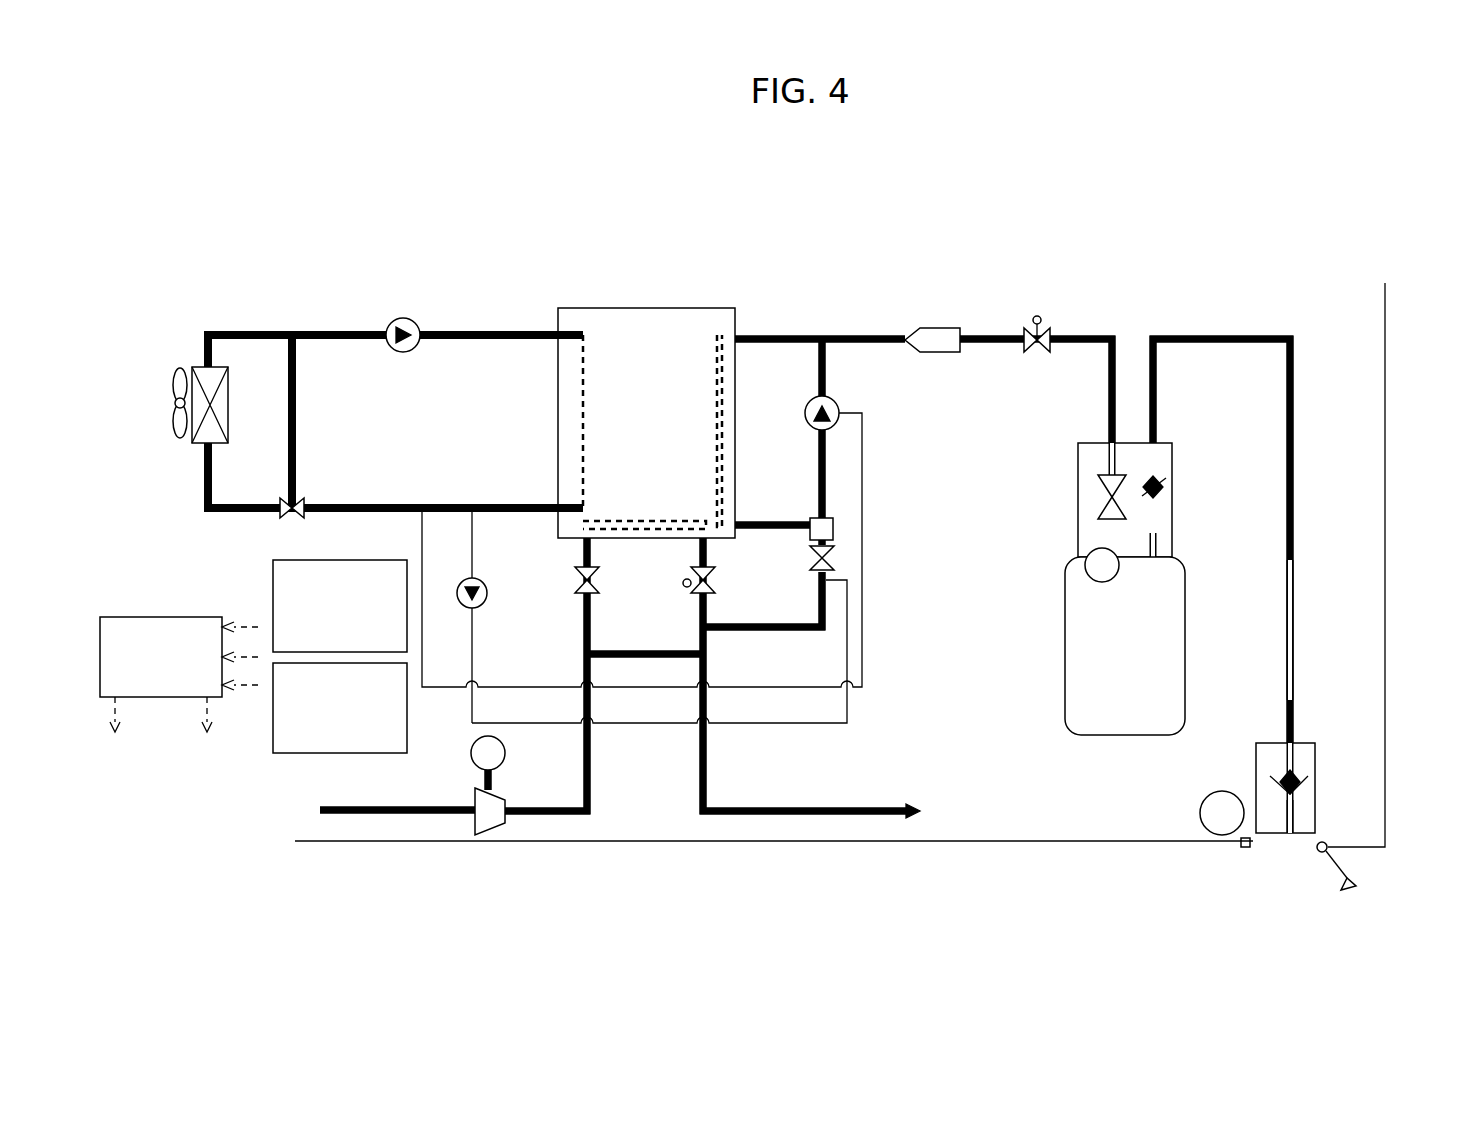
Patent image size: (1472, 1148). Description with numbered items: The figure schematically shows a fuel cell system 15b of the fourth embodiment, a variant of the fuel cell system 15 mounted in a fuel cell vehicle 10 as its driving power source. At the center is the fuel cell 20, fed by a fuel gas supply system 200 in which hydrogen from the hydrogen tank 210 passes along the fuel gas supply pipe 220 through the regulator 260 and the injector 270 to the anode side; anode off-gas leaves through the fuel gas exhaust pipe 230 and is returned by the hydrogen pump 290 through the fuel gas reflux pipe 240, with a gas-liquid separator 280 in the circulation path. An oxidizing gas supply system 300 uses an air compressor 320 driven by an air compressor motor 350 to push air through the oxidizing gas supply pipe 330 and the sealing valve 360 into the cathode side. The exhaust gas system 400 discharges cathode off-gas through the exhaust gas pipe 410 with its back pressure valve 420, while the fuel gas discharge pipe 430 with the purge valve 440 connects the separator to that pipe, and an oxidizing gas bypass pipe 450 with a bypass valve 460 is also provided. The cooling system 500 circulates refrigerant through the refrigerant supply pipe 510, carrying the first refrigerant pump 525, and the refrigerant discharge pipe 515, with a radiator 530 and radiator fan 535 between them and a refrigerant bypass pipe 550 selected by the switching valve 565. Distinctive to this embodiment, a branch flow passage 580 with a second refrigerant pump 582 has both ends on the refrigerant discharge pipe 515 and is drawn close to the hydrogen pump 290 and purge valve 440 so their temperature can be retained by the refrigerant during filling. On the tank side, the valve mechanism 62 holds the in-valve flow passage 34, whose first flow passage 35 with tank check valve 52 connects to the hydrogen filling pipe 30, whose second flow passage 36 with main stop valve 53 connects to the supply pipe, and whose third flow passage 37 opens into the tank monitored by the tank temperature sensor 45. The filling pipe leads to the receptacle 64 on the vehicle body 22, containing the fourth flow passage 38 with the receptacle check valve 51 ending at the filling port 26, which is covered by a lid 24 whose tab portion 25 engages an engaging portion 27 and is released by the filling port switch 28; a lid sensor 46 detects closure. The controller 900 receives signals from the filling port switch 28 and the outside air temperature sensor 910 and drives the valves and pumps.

The fuel cell vehicle 10 is at (1405, 207).
The fuel cell system 15 is at (253, 239).
The fuel cell system 15b is at (1283, 276).
The fuel cell 20 is at (594, 306).
The vehicle body 22 is at (1390, 476).
The lid 24 is at (1352, 878).
The tab portion 25 is at (1352, 890).
The filling port 26 is at (1287, 862).
The engaging portion 27 is at (1247, 848).
The filling port switch 28 is at (300, 558).
The hydrogen filling pipe 30 is at (1298, 553).
The in-valve flow passage 34 is at (982, 452).
The first flow passage 35 is at (1098, 485).
The second flow passage 36 is at (1100, 452).
The third flow passage 37 is at (1150, 545).
The fourth flow passage 38 is at (1300, 815).
The tank temperature sensor 45 is at (1095, 582).
The lid sensor 46 is at (1202, 826).
The receptacle check valve 51 is at (1290, 772).
The tank check valve 52 is at (1168, 478).
The main stop valve 53 is at (1100, 518).
The valve mechanism 62 is at (1175, 518).
The receptacle 64 is at (1318, 795).
The fuel gas supply system 200 is at (740, 326).
The hydrogen tank 210 is at (1188, 622).
The fuel gas supply pipe 220 is at (994, 350).
The fuel gas exhaust pipe 230 is at (775, 520).
The fuel gas reflux pipe 240 is at (848, 380).
The regulator 260 is at (1043, 354).
The injector 270 is at (938, 356).
The gas-liquid separator 280 is at (836, 528).
The hydrogen pump 290 is at (812, 400).
The oxidizing gas supply system 300 is at (310, 850).
The air compressor 320 is at (470, 800).
The oxidizing gas supply pipe 330 is at (514, 805).
The air compressor motor 350 is at (306, 750).
The sealing valve 360 is at (575, 582).
The exhaust gas system 400 is at (925, 850).
The exhaust gas pipe 410 is at (748, 806).
The back pressure valve 420 is at (715, 586).
The fuel gas discharge pipe 430 is at (740, 630).
The purge valve 440 is at (836, 558).
The oxidizing gas bypass pipe 450 is at (618, 648).
The bypass valve 460 is at (662, 591).
The cooling system 500 is at (545, 308).
The refrigerant supply pipe 510 is at (505, 345).
The refrigerant discharge pipe 515 is at (506, 500).
The first refrigerant pump 525 is at (403, 353).
The radiator 530 is at (230, 420).
The radiator fan 535 is at (172, 404).
The refrigerant bypass pipe 550 is at (300, 418).
The switching valve 565 is at (304, 495).
The branch flow passage 580 is at (418, 540).
The second refrigerant pump 582 is at (488, 600).
The controller 900 is at (110, 615).
The outside air temperature sensor 910 is at (300, 758).